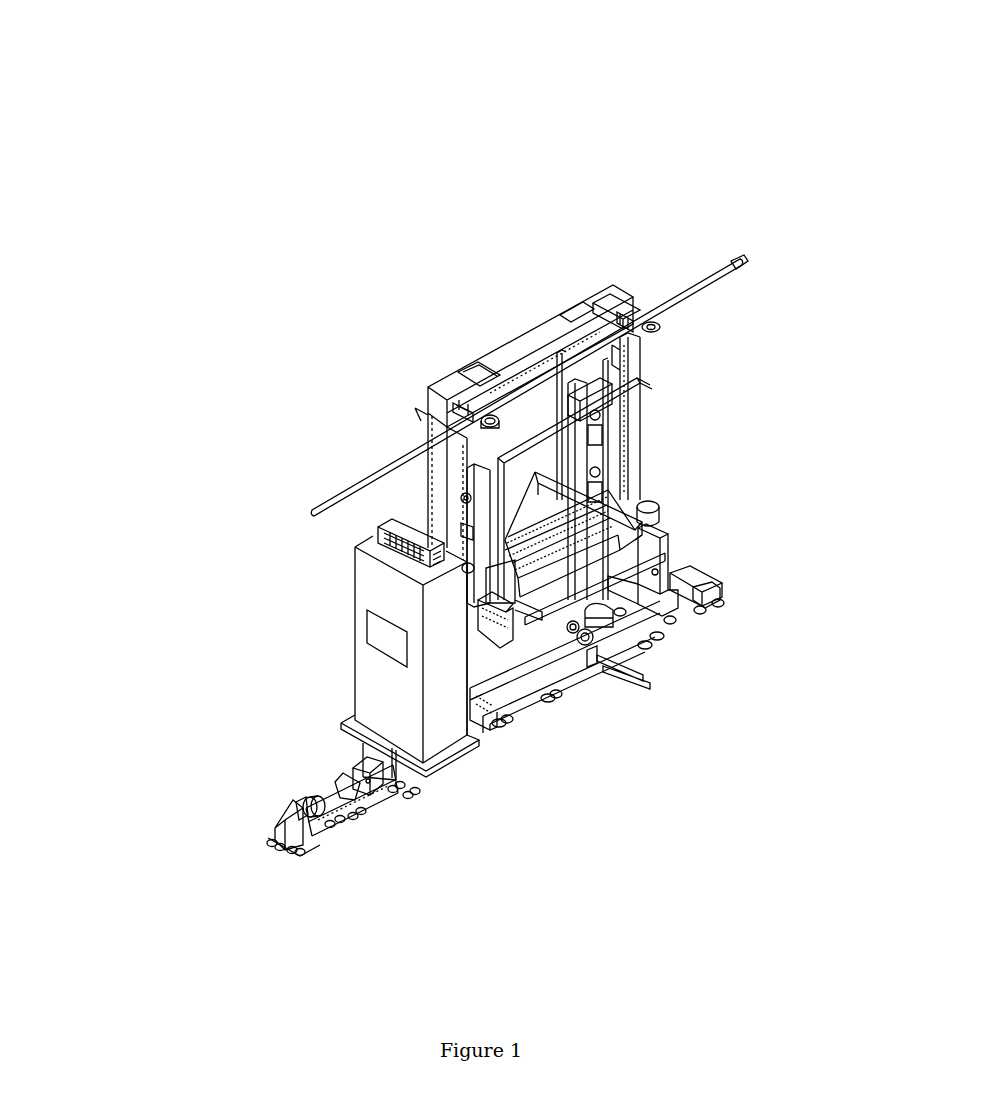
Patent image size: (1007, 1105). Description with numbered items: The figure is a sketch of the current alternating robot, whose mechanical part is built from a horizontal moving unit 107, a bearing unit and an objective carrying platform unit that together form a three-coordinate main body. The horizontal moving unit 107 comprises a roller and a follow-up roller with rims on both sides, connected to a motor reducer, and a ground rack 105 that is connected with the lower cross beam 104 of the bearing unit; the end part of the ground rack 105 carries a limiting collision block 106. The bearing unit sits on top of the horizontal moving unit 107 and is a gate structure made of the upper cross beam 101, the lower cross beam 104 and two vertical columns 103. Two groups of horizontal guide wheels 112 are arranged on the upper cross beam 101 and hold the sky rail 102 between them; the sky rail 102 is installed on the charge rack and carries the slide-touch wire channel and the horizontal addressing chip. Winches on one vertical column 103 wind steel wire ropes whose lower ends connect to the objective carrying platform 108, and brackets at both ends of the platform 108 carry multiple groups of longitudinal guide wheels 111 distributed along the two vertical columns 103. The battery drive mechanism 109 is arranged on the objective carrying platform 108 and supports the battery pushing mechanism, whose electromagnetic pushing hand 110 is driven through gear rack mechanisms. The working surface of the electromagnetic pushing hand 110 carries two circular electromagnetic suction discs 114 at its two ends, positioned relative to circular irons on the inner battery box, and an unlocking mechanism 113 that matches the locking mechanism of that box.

The upper cross beam 101 is at (432, 380).
The sky rail 102 is at (427, 430).
The vertical columns 103 is at (443, 470).
The lower cross beam 104 is at (548, 662).
The ground rack 105 is at (308, 800).
The limiting collision block 106 is at (283, 847).
The horizontal moving unit 107 is at (685, 582).
The objective carrying platform 108 is at (638, 555).
The battery drive mechanism 109 is at (640, 498).
The electromagnetic pushing hand 110 is at (637, 422).
The longitudinal guide wheels 111 is at (560, 435).
The horizontal guide wheels 112 is at (560, 483).
The unlocking mechanism 113 is at (540, 490).
The electromagnetic suction discs 114 is at (520, 478).